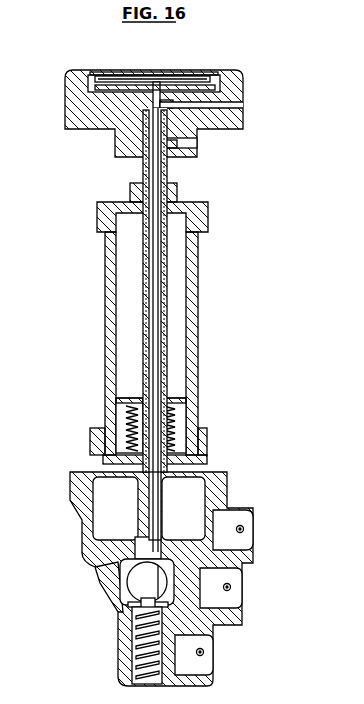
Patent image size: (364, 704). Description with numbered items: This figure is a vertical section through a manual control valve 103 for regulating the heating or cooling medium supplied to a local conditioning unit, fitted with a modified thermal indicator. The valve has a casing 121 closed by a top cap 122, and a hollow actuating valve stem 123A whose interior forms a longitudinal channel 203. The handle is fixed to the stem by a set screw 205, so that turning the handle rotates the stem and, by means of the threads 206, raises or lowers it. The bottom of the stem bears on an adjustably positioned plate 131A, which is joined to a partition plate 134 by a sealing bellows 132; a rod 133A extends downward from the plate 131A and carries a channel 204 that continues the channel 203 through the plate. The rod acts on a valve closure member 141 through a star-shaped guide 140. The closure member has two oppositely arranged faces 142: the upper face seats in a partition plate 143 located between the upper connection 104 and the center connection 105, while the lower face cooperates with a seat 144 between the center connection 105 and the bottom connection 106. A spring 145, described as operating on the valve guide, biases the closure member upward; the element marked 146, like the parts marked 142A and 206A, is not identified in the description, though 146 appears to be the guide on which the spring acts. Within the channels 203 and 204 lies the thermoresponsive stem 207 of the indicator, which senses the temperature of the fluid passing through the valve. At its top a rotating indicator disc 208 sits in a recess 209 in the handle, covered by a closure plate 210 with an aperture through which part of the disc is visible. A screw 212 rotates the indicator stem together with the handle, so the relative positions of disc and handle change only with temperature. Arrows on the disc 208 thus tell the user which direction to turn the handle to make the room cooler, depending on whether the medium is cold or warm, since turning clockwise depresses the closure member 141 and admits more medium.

The closure plate 210 is at (154, 64).
The indicator disc 208 is at (183, 72).
The recess 209 is at (222, 87).
The screw 212 is at (242, 105).
The cap body 142A is at (110, 118).
The set screw 205 is at (197, 145).
The valve stem 123A is at (145, 165).
The thermal indicator stem 207 is at (158, 172).
The threads 206 is at (145, 182).
The top cap 122 is at (208, 219).
The manual control valve 103 is at (112, 289).
The channel 203 is at (198, 290).
The sleeve 206A is at (163, 320).
The casing 121 is at (195, 343).
The channel 204 is at (142, 400).
The adjustably positioned plate 131A is at (187, 398).
The sealing bellows 132 is at (132, 418).
The partition plate 134 is at (188, 460).
The rod 133A is at (142, 495).
The upper connection 104 is at (244, 528).
The center connection 105 is at (231, 588).
The bottom connection 106 is at (204, 653).
The partition plate 143 is at (133, 543).
The star-shaped guide 140 is at (130, 556).
The faces 142 is at (127, 572).
The valve closure member 141 is at (147, 589).
The valve seat 144 is at (128, 620).
The spring guide 146 is at (130, 632).
The spring 145 is at (130, 652).